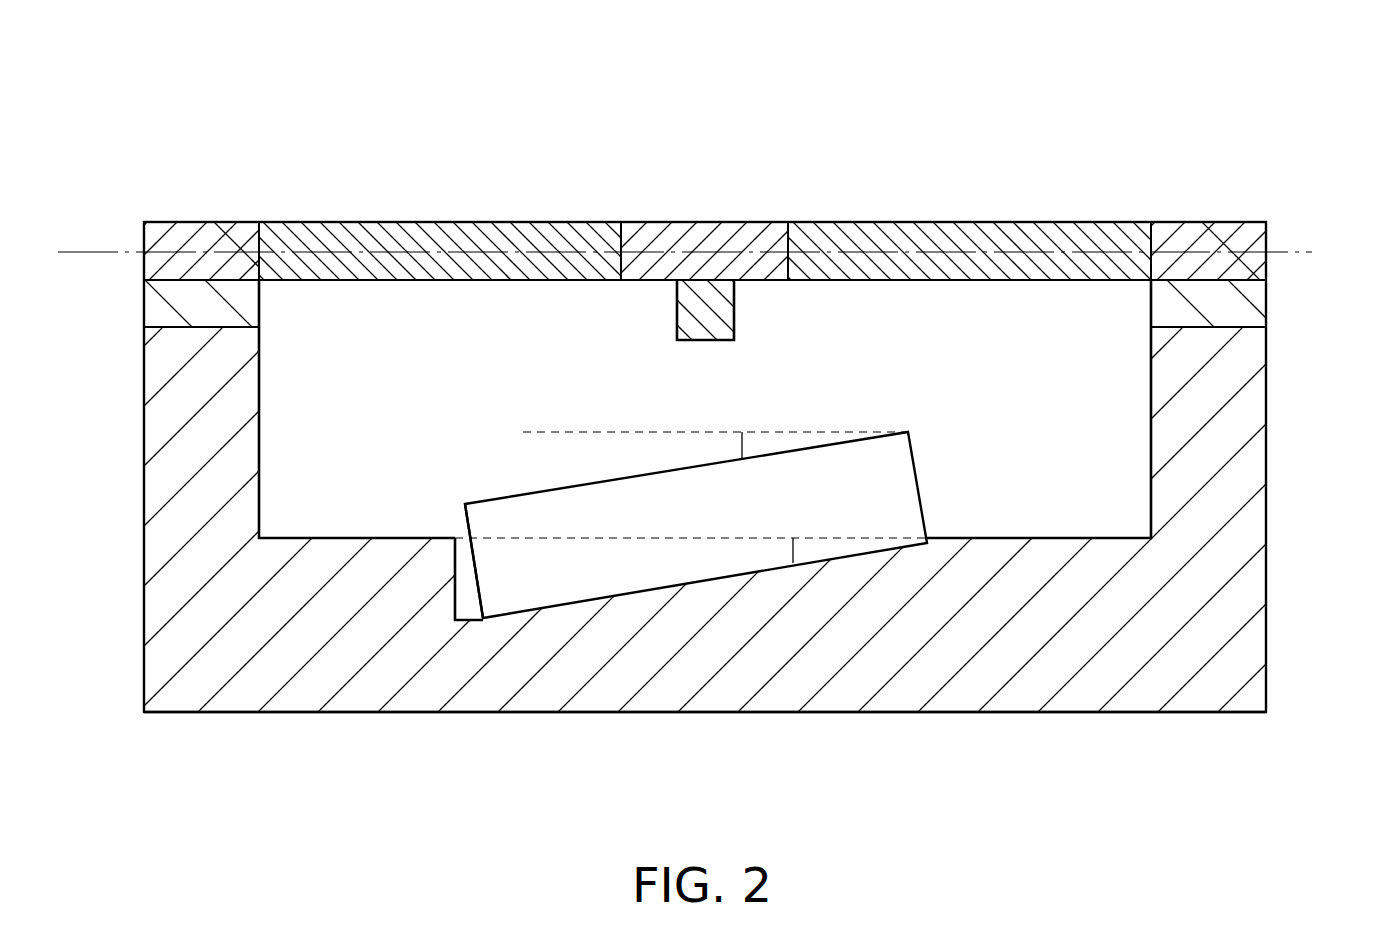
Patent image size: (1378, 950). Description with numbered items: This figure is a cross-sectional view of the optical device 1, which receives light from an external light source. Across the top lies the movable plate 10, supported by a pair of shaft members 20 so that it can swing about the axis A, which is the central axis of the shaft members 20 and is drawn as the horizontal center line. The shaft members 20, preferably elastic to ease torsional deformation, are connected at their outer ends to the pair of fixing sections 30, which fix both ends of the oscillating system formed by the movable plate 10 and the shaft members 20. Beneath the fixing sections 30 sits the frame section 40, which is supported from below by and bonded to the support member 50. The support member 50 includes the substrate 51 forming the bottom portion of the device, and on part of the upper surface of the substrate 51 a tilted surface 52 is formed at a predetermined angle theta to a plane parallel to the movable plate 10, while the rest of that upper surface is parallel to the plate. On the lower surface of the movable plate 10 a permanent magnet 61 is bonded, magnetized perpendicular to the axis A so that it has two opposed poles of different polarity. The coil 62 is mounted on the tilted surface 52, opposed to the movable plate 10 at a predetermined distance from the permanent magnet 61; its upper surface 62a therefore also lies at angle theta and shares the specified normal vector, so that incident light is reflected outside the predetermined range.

The optical device 1 is at (308, 108).
The movable plate 10 is at (697, 236).
The shaft members 20 is at (428, 236).
The fixing sections 30 is at (215, 238).
The frame section 40 is at (155, 307).
The support member 50 is at (689, 506).
The substrate 51 is at (668, 692).
The tilted surface 52 is at (468, 622).
The permanent magnet 61 is at (705, 328).
The coil 62 is at (728, 514).
The upper surface of the coil 62a is at (492, 500).
The axis A is at (100, 252).